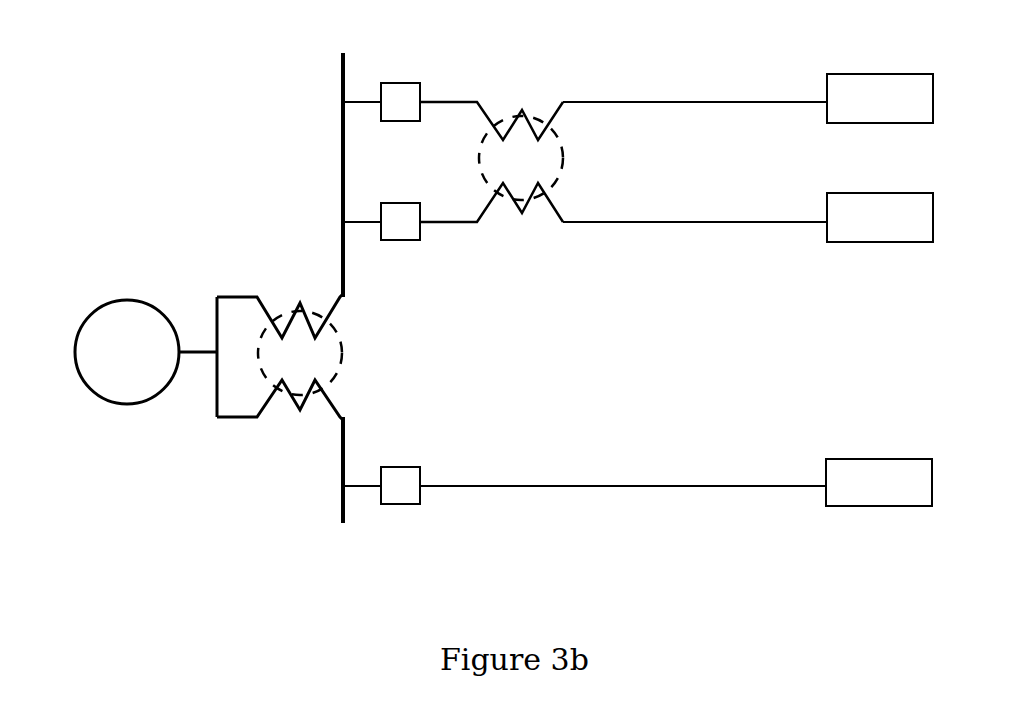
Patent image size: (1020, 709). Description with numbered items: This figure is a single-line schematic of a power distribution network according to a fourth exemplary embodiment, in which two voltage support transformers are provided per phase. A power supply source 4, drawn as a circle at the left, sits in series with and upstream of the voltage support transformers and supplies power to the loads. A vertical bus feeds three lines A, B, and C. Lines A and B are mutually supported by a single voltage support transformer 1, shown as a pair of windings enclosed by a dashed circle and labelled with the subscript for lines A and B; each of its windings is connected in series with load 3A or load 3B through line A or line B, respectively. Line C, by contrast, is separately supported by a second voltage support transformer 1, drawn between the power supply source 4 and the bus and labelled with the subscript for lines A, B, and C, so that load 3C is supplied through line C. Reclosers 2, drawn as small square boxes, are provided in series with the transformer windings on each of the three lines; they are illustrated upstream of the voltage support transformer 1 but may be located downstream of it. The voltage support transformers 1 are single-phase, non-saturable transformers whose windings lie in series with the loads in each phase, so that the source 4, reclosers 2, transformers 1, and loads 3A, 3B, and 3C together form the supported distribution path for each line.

The voltage support transformer 1 is at (390, 261).
The recloser 2 is at (400, 293).
The load 3A is at (880, 98).
The load 3B is at (880, 217).
The load 3C is at (879, 482).
The power supply source 4 is at (146, 352).
The line A is at (656, 89).
The line B is at (656, 209).
The line C is at (656, 473).